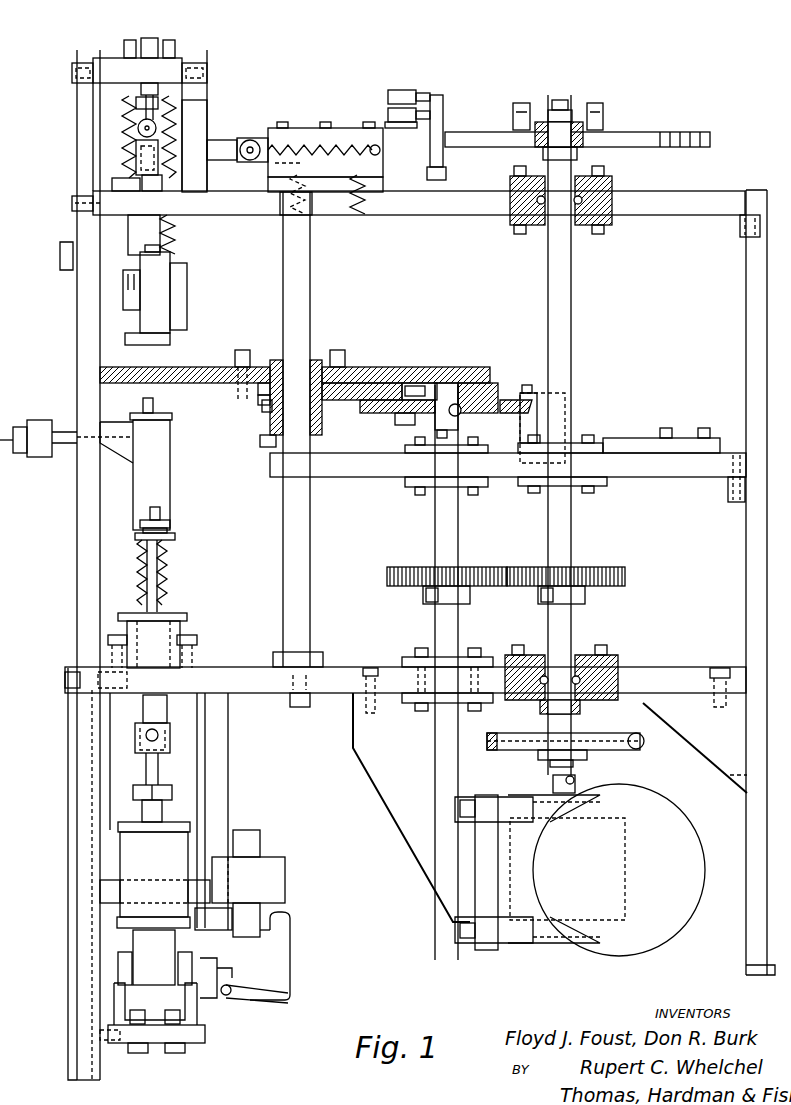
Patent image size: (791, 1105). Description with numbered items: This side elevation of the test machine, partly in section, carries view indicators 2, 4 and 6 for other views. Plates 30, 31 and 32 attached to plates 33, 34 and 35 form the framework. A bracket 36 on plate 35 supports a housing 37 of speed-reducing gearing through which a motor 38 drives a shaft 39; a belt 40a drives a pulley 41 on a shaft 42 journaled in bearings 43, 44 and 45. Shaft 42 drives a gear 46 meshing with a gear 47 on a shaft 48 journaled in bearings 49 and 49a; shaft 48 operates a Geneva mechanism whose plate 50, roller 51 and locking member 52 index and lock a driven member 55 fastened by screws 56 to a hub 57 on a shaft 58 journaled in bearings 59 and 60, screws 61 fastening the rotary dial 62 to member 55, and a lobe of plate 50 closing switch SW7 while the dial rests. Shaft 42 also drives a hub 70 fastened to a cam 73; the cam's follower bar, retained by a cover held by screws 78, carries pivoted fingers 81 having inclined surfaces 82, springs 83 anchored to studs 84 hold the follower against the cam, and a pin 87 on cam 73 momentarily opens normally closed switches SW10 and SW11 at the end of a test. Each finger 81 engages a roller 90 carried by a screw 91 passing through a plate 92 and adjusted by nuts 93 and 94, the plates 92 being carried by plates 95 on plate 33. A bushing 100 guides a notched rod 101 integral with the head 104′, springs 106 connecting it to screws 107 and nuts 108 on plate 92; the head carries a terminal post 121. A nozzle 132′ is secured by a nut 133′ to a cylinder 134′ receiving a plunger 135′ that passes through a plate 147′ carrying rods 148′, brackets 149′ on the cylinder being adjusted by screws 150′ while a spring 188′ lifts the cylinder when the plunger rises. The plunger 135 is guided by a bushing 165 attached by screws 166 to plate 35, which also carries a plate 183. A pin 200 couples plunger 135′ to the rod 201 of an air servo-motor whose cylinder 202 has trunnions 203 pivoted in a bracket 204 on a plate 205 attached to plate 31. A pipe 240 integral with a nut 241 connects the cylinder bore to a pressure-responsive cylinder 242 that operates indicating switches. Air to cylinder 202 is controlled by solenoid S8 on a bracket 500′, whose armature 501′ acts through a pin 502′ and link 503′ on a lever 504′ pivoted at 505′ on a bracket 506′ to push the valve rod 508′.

The section view direction 2 is at (60, 532).
The section line 4- 4 is at (343, 967).
The section line 6- 6 is at (603, 343).
The plate 30 is at (68, 735).
The plate 31 is at (77, 578).
The plate 32 is at (746, 560).
The plate 33 is at (245, 215).
The plate 34 is at (372, 478).
The plate 35 is at (265, 694).
The bracket 36 is at (400, 822).
The housing 37 is at (518, 828).
The motor 38 is at (705, 868).
The shaft 39 is at (576, 780).
The belt 40a is at (640, 740).
The pulley 41 is at (640, 745).
The shaft 42 is at (575, 632).
The bearing 43 is at (583, 178).
The bearing 44 is at (600, 450).
The bearing 45 is at (600, 670).
The gear 46 is at (638, 560).
The gear 47 is at (403, 567).
The shaft 48 is at (435, 526).
The bearing 49a is at (450, 703).
The bearing 49 is at (478, 487).
The plate 50 is at (395, 413).
The roller 51 is at (435, 368).
The locking member 52 is at (503, 395).
The driven member 55 is at (388, 367).
The screws 56 is at (262, 420).
The hub 57 is at (268, 425).
The shaft 58 is at (283, 538).
The bearing 59 is at (312, 690).
The bearing 60 is at (316, 205).
The screws 61 is at (240, 352).
The rotary conveyor or dial 62 is at (248, 368).
The hub 70 is at (610, 122).
The cam 73 is at (668, 132).
The screws 78 is at (305, 185).
The fingers 81 is at (233, 140).
The inclined surface 82 is at (180, 164).
The springs 83 is at (298, 128).
The studs 84 is at (380, 150).
The pin 87 is at (443, 108).
The roller 90 is at (122, 131).
The screw 91 is at (110, 102).
The plate 92 is at (97, 58).
The nut 93 is at (155, 38).
The nut 94 is at (159, 71).
The plates 95 is at (207, 103).
The bushing 100 is at (110, 183).
The rod 101 is at (130, 160).
The head 104′ is at (162, 280).
The springs 106 is at (170, 135).
The screws 107 is at (167, 40).
The nuts 108 is at (190, 62).
The terminal post 121 is at (128, 231).
The nozzle 132′ is at (147, 398).
The nut 133′ is at (172, 418).
The cylinder 134′ is at (165, 447).
The plunger 135′ is at (170, 555).
The plunger 135 is at (160, 715).
The plate 147′ is at (190, 615).
The threaded rods 148′ is at (168, 600).
The brackets 149′ is at (170, 522).
The screws 150′ is at (168, 530).
The bushing 165 is at (127, 618).
The screws 166 is at (108, 641).
The plate 183 is at (228, 783).
The spring 188′ is at (170, 568).
The pin 200 is at (158, 736).
The rod 201 is at (160, 805).
The cylinder 202 is at (118, 840).
The trunnions 203 is at (133, 970).
The bracket 204 is at (114, 1001).
The plate 205 is at (208, 1037).
The pipe 240 is at (68, 445).
The nut 241 is at (40, 420).
The cylinder 242 is at (12, 427).
The bracket 500′ is at (196, 941).
The armature 501′ is at (260, 842).
The pin 502′ is at (283, 920).
The link 503′ is at (290, 968).
The lever 504′ is at (258, 1000).
The pivot 505′ is at (226, 995).
The bracket 506′ is at (219, 965).
The valve operating rod 508′ is at (232, 968).
The solenoid SO8 S8 is at (285, 890).
The switch SW7 is at (540, 398).
The switch SW10 is at (392, 90).
The switch SW11 is at (390, 110).